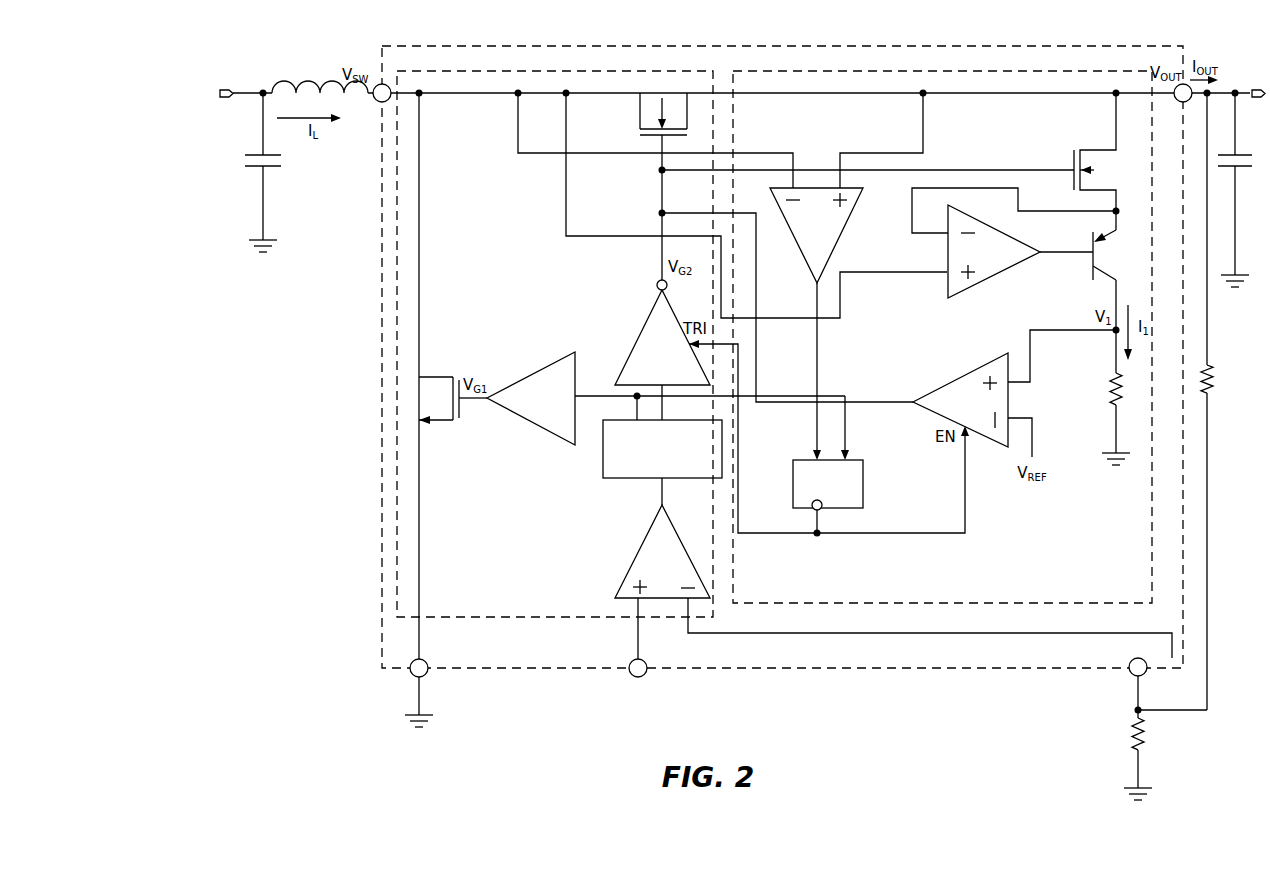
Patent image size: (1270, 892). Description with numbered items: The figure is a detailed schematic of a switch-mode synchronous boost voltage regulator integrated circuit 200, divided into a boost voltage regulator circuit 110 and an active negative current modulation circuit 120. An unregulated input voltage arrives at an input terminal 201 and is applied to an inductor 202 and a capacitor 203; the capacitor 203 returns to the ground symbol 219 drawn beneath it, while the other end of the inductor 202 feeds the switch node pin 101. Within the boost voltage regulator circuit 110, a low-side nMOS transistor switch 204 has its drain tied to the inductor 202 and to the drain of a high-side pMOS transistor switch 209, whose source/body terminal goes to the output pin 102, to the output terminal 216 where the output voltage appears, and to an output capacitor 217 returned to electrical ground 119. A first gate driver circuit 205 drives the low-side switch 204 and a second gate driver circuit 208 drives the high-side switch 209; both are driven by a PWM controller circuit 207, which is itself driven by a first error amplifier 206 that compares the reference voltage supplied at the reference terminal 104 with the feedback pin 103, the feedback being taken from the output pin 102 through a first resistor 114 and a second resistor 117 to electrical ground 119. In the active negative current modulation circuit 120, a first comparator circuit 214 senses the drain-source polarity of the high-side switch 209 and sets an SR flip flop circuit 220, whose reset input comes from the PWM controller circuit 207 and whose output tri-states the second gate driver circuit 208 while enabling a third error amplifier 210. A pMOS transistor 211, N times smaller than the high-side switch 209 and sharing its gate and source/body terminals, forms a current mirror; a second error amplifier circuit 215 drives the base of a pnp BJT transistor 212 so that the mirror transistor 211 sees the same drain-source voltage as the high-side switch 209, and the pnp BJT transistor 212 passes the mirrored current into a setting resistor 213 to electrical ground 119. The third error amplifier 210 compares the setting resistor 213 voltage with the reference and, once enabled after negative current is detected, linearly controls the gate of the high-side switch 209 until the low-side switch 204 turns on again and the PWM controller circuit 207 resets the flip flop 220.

The switch-mode synchronous boost voltage regulator integrated circuit 200 is at (286, 736).
The boost voltage regulator circuit 110 is at (555, 344).
The active negative current modulation circuit 120 is at (942, 346).
The input terminal 201 is at (232, 97).
The inductor 202 is at (320, 82).
The capacitor 203 is at (246, 156).
The ground 219 is at (263, 240).
The switch node (SW) pin 101 is at (375, 100).
The output pin 102 is at (1179, 103).
The output terminal 216 is at (1258, 90).
The output capacitor 217 is at (1252, 156).
The electrical ground 119 is at (1250, 276).
The high-side pMOS transistor switch 209 is at (640, 112).
The first comparator circuit 214 is at (838, 247).
The second error amplifier circuit 215 is at (985, 285).
The pMOS transistor 211 is at (1100, 190).
The pnp BJT transistor 212 is at (1097, 258).
The setting resistor 213 is at (1123, 386).
The third error amplifier circuit 210 is at (952, 378).
The SR flip flop circuit 220 is at (865, 485).
The low-side nMOS transistor switch 204 is at (433, 377).
The first gate driver circuit 205 is at (530, 430).
The second gate driver circuit 208 is at (633, 342).
The PWM controller circuit 207 is at (603, 470).
The first error amplifier 206 is at (638, 550).
The reference voltage terminal 104 is at (638, 679).
The feedback pin 103 is at (1131, 677).
The first resistor 114 is at (1213, 384).
The second resistor 117 is at (1158, 735).